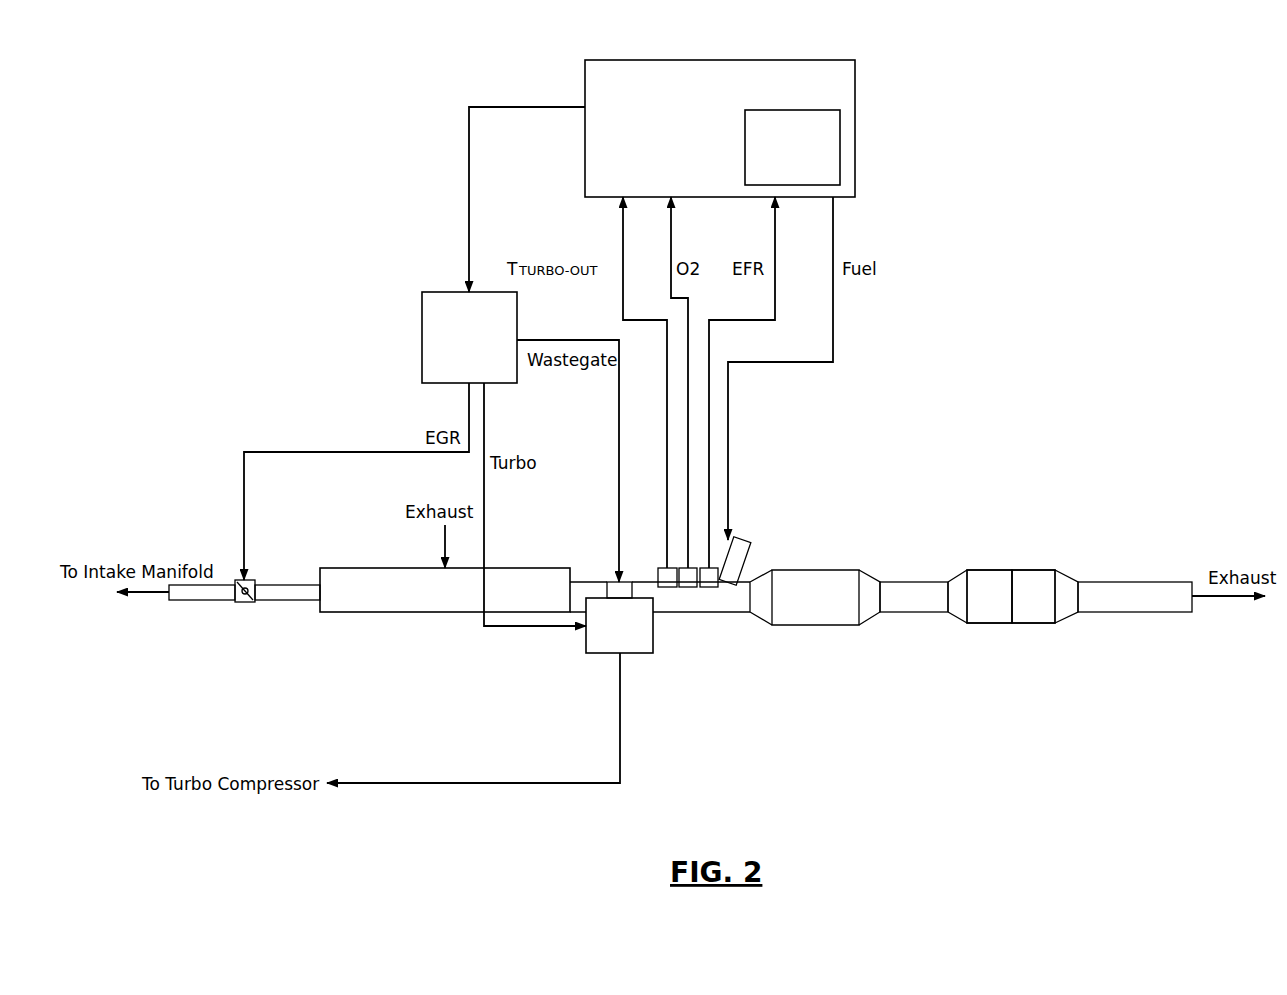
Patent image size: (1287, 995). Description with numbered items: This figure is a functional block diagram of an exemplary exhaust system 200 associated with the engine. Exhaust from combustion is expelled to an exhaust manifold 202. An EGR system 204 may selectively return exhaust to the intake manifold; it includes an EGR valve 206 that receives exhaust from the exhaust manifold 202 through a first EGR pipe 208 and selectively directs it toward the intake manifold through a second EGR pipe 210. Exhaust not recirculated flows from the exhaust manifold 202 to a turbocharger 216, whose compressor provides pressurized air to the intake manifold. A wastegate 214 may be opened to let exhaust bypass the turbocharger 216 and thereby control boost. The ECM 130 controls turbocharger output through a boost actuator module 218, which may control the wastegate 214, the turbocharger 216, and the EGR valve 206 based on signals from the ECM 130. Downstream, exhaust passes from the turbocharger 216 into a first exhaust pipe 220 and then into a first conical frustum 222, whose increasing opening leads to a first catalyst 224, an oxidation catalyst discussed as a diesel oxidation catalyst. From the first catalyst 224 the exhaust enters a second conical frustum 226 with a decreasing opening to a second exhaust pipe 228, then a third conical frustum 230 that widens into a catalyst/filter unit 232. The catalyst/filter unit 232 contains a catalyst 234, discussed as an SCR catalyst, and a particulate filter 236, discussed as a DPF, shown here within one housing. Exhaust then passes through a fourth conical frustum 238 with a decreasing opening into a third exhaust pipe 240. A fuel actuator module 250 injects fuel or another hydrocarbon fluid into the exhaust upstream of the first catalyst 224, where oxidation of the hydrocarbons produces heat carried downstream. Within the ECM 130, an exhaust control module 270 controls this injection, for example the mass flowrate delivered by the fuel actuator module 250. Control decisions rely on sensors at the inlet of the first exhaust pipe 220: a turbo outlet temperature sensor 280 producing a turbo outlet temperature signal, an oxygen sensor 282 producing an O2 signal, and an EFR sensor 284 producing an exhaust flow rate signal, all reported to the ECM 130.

The ECM 130 is at (717, 60).
The exhaust control module 270 is at (840, 140).
The boost actuator module 218 is at (440, 292).
The exhaust system 200 is at (1035, 426).
The exhaust manifold 202 is at (370, 612).
The EGR system 204 is at (318, 685).
The EGR valve 206 is at (244, 602).
The first EGR pipe 208 is at (287, 601).
The second EGR pipe 210 is at (182, 601).
The wastegate 214 is at (617, 581).
The turbocharger 216 is at (600, 653).
The first exhaust pipe 220 is at (735, 612).
The first conical frustum 222 is at (763, 625).
The first catalyst 224 is at (802, 625).
The second conical frustum 226 is at (868, 621).
The second exhaust pipe 228 is at (914, 612).
The third conical frustum 230 is at (960, 623).
The catalyst/filter unit 232 is at (1035, 547).
The catalyst 234 is at (989, 623).
The particulate filter 236 is at (1033, 623).
The fourth conical frustum 238 is at (1067, 623).
The third exhaust pipe 240 is at (1138, 612).
The fuel actuator module 250 is at (749, 562).
The turbo outlet temperature sensor 280 is at (668, 588).
The oxygen sensor 282 is at (688, 588).
The EFR sensor 284 is at (709, 588).